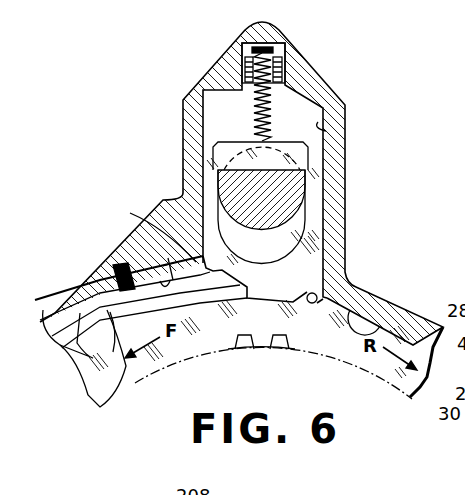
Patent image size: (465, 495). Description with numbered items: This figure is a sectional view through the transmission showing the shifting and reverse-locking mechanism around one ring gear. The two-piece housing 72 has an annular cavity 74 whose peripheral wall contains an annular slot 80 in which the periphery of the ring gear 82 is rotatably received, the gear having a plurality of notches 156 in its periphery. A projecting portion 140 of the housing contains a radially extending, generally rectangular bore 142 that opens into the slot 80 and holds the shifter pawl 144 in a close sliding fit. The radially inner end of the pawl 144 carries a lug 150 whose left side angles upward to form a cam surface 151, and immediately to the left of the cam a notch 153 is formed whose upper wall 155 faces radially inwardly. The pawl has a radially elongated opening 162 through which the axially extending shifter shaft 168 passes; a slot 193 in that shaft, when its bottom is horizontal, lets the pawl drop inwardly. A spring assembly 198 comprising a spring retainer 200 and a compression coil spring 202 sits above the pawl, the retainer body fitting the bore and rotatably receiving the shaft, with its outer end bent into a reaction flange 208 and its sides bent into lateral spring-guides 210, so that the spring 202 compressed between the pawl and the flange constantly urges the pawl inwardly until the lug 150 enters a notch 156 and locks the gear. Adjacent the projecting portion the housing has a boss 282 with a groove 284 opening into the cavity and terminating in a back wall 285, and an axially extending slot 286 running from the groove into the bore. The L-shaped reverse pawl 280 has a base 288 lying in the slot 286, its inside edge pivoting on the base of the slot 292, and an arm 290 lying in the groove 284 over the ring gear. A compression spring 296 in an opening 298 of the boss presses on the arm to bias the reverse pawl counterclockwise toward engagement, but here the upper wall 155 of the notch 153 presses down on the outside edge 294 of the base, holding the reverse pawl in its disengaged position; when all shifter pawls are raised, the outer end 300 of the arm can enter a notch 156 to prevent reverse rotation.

The annular cavity 74 is at (172, 404).
The two-piece housing 72 is at (413, 313).
The annular slot 80 is at (393, 302).
The ring gear 82 is at (393, 378).
The projecting portion 140 is at (344, 119).
The rectangular bore 142 is at (326, 131).
The shifter pawl 144 is at (314, 217).
The lug 150 is at (291, 303).
The cam surface 151 is at (259, 312).
The notch 153 is at (211, 283).
The upper wall 155 is at (148, 216).
The notches 156 is at (310, 306).
The opening 162 is at (182, 158).
The shifter shaft 168 is at (296, 182).
The slot 193 is at (306, 150).
The spring assembly 198 is at (280, 108).
The spring retainer 200 is at (250, 47).
The compression coil spring 202 is at (262, 118).
The reaction flange 208 is at (268, 48).
The lateral spring-guides 210 is at (280, 62).
The reverse pawl 280 is at (82, 390).
The boss 282 is at (158, 208).
The groove 284 is at (68, 330).
The back wall 285 is at (64, 344).
The axially extending slot 286 is at (225, 247).
The base 288 is at (160, 253).
The arm 290 is at (126, 368).
The base of the slot 292 is at (158, 262).
The outside edge 294 is at (226, 268).
The compression spring 296 is at (114, 284).
The opening 298 is at (113, 280).
The outer end 300 is at (70, 378).